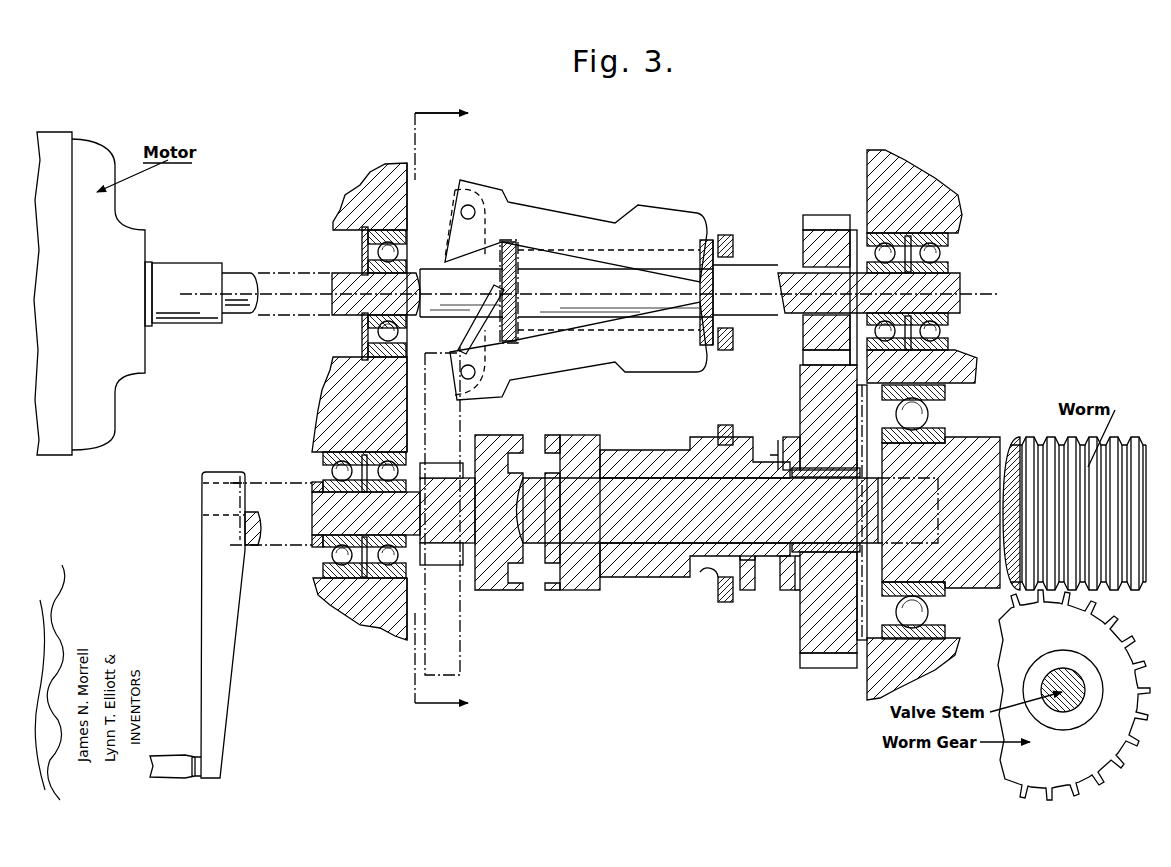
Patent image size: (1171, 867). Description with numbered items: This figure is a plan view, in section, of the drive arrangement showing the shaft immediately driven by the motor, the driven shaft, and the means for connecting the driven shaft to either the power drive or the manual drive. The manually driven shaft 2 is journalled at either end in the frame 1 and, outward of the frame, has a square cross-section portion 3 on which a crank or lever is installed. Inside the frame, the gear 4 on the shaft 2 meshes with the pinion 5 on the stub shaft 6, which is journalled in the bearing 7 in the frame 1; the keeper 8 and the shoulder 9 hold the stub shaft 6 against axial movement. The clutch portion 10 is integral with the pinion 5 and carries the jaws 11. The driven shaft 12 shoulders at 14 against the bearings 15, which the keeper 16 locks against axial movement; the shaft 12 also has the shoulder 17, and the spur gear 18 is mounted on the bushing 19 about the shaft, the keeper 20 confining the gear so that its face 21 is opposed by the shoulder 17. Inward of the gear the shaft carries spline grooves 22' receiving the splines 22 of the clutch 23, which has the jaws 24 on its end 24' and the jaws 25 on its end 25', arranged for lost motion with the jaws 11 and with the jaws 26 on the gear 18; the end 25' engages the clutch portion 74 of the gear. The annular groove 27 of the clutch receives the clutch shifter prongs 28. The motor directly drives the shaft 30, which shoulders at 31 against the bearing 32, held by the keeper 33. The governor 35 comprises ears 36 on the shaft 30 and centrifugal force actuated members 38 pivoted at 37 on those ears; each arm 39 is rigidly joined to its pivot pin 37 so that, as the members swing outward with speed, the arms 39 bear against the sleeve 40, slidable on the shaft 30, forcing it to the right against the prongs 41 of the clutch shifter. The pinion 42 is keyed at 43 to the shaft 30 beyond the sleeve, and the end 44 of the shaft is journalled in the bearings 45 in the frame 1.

The frame 1 is at (372, 185).
The manually driven shaft 2 is at (600, 575).
The square cross-section portion 3 is at (225, 480).
The gear 4 is at (478, 638).
The pinion 5 is at (445, 466).
The stub shaft 6 is at (318, 517).
The bearing 7 is at (325, 560).
The keeper 8 is at (316, 485).
The shoulder 9 is at (418, 560).
The clutch portion 10 is at (500, 445).
The jaws 11 is at (522, 590).
The driven shaft 12 is at (968, 440).
The shoulder 14 is at (950, 585).
The bearings 15 is at (930, 612).
The keeper 16 is at (868, 645).
The shoulder 17 is at (850, 478).
The spur gear 18 is at (812, 390).
The bushing 19 is at (785, 570).
The keeper 20 is at (786, 460).
The face 21 is at (845, 640).
The splines 22 is at (728, 512).
The spline grooves 22' is at (764, 435).
The clutch 23 is at (675, 450).
The jaws 24 is at (547, 503).
The clutch end 24' is at (580, 503).
The jaws 25 is at (747, 586).
The clutch end 25' is at (724, 422).
The jaws 26 is at (800, 600).
The annular groove 27 is at (712, 580).
The clutch shifter prongs 28 is at (725, 604).
The shaft 30 is at (332, 292).
The shoulder 31 is at (410, 262).
The bearing 32 is at (370, 331).
The keeper 33 is at (364, 352).
The governor 35 is at (575, 355).
The ears 36 is at (455, 342).
The pivot pin 37 is at (466, 380).
The centrifugal force actuated members 38 is at (648, 370).
The arm 39 is at (496, 292).
The sleeve 40 is at (585, 294).
The prongs 41 is at (733, 340).
The pinion 42 is at (815, 222).
The key 43 is at (856, 265).
The shaft end 44 is at (950, 275).
The bearings 45 is at (942, 330).
The clutch portion 74 is at (810, 412).